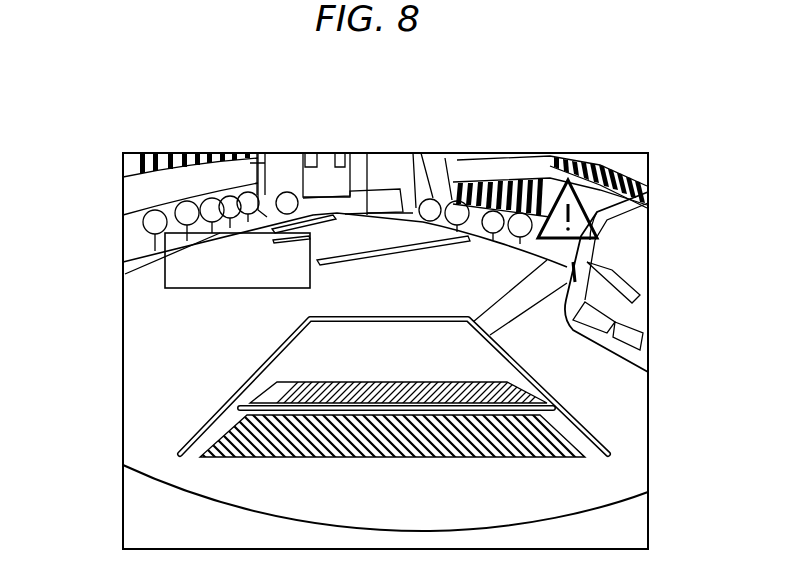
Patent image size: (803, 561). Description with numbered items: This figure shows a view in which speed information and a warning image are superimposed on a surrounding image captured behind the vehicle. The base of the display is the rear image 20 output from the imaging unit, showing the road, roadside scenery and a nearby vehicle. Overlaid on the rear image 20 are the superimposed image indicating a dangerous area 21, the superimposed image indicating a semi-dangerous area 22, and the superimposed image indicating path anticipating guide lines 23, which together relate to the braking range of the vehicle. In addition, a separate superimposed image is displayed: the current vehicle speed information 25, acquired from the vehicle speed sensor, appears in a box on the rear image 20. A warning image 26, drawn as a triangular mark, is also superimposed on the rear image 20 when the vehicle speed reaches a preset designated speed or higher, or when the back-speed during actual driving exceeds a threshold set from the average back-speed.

The rear image 20 is at (143, 345).
The superimposed image indicating a dangerous area 21 is at (560, 437).
The superimposed image indicating a semi-dangerous area 22 is at (525, 389).
The superimposed image indicating path anticipating guide lines 23 is at (205, 424).
The current vehicle speed information 25 is at (133, 271).
The warning image 26 is at (580, 165).